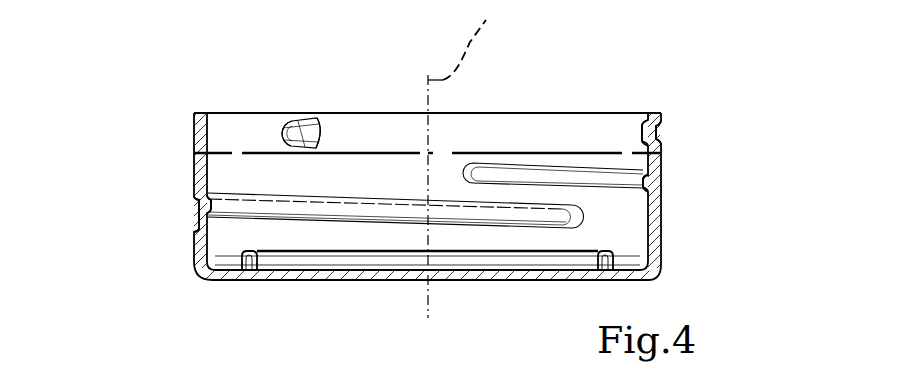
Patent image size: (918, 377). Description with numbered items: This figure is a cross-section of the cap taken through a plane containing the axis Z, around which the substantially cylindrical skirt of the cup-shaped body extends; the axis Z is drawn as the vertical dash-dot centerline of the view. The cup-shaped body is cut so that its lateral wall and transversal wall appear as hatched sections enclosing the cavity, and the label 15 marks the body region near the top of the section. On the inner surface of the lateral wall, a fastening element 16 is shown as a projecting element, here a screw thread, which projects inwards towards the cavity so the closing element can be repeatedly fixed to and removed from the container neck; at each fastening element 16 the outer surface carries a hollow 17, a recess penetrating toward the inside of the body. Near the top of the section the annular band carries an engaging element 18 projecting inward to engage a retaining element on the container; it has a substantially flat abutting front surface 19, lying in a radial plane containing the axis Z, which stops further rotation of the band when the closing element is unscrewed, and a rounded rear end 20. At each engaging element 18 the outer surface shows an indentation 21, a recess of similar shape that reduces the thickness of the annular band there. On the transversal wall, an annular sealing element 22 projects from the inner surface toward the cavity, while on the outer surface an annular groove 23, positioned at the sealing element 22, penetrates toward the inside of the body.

The cap body 15 is at (427, 140).
The fastening element 16 is at (538, 178).
The hollow 17 is at (649, 183).
The engaging element 18 is at (302, 130).
The abutting front surface 19 is at (327, 135).
The rounded rear end 20 is at (283, 133).
The indentation 21 is at (655, 133).
The annular sealing element 22 is at (612, 252).
The annular groove 23 is at (250, 280).
The axis Z is at (468, 159).